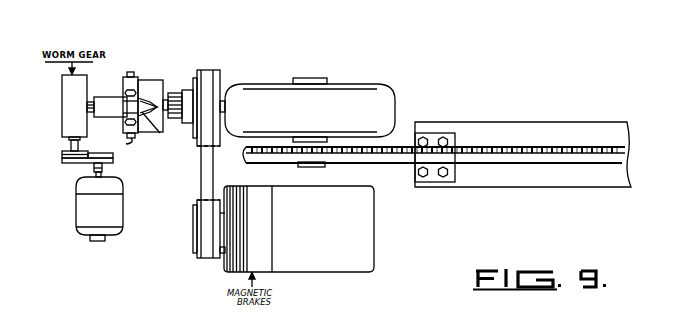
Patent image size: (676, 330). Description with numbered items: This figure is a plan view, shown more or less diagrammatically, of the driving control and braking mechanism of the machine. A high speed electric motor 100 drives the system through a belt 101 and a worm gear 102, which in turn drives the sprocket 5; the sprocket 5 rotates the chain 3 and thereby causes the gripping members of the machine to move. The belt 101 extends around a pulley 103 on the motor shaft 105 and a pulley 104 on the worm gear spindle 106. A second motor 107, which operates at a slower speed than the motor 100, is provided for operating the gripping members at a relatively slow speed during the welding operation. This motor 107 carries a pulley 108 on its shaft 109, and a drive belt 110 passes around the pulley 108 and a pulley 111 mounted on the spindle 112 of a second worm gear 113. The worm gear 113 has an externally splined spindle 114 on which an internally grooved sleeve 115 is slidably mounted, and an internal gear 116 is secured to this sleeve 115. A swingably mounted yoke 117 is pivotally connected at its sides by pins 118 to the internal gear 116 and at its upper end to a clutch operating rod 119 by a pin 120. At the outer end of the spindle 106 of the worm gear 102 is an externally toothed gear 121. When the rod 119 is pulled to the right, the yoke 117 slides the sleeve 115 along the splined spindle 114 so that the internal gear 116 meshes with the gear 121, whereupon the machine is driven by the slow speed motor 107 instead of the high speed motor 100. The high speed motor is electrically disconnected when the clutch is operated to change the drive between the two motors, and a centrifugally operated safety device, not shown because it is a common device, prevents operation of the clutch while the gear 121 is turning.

The chain 3 is at (394, 165).
The sprocket 5 is at (247, 160).
The electric motor 100 is at (338, 268).
The belt 101 is at (200, 177).
The worm gear 102 is at (265, 82).
The pulley 103 is at (197, 222).
The pulley 104 is at (220, 70).
The motor shaft 105 is at (222, 263).
The worm gear spindle 106 is at (223, 98).
The motor 107 is at (77, 211).
The pulley 108 is at (98, 152).
The shaft 109 is at (103, 169).
The drive belt 110 is at (77, 161).
The pulley 111 is at (63, 162).
The spindle 112 is at (69, 147).
The worm gear 113 is at (62, 109).
The externally splined spindle 114 is at (91, 101).
The internally grooved sleeve 115 is at (98, 102).
The internal gear 116 is at (152, 80).
The yoke 117 is at (138, 78).
The pins 118 is at (130, 72).
The clutch operating rod 119 is at (158, 124).
The pin 120 is at (124, 139).
The externally toothed gear 121 is at (174, 93).